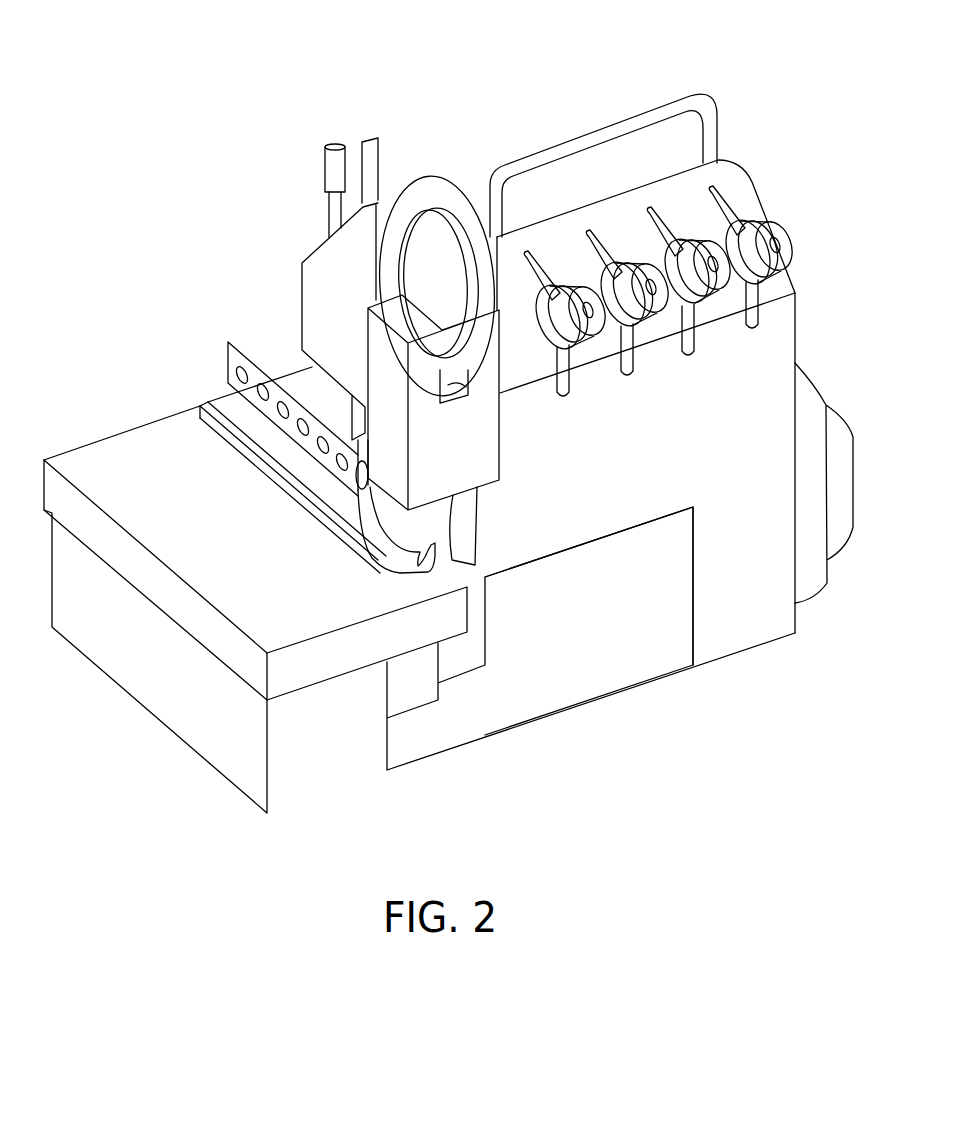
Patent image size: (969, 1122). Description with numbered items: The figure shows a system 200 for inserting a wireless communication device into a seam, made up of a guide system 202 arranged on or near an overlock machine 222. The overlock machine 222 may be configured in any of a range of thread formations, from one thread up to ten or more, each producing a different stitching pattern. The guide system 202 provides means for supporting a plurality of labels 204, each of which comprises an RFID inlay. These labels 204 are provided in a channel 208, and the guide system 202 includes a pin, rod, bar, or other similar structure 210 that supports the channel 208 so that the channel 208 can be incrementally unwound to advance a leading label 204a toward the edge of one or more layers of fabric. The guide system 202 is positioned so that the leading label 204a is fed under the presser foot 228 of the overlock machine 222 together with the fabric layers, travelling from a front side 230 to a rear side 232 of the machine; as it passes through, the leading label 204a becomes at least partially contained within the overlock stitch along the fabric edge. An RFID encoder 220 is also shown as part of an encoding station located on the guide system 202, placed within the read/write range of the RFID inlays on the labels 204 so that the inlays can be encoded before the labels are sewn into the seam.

The system 200 is at (230, 95).
The guide system 202 is at (492, 447).
The labels 204 is at (452, 163).
The leading label 204a is at (470, 535).
The channel 208 is at (424, 201).
The pin, rod, bar, or other similar structure 210 is at (443, 322).
The RFID encoder 220 is at (381, 375).
The overlock machine 222 is at (625, 668).
The presser foot 228 is at (397, 550).
The front side 230 is at (558, 737).
The rear side 232 is at (187, 396).